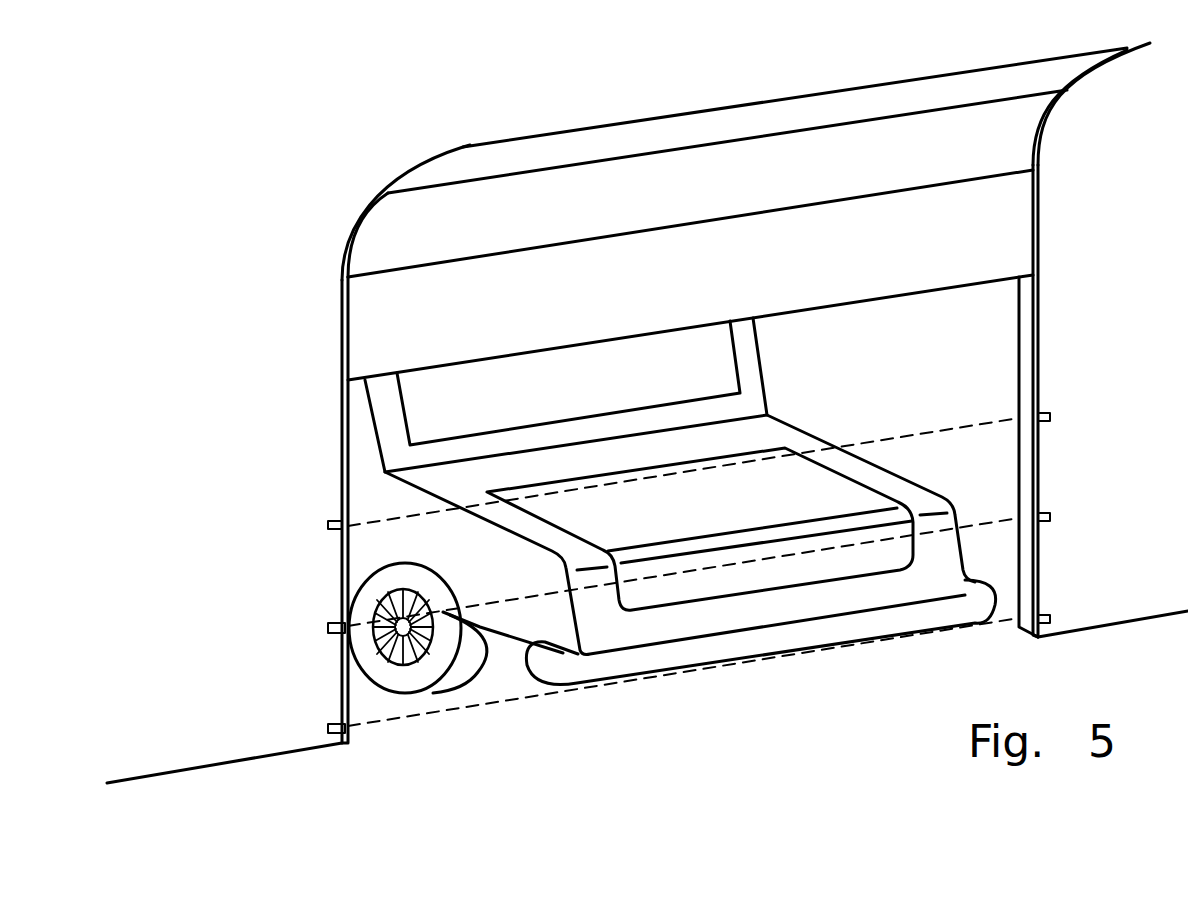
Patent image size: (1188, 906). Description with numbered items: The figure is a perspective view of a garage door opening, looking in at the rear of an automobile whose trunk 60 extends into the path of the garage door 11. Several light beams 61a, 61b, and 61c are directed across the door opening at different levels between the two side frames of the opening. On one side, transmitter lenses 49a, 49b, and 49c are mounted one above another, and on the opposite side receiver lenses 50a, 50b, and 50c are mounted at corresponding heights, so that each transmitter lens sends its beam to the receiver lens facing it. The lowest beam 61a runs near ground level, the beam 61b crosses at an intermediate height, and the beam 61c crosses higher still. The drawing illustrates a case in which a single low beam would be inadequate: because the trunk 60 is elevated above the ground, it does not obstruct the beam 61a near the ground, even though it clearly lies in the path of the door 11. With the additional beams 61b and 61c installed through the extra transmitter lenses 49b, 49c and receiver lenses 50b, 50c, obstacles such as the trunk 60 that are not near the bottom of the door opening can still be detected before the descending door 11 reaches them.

The garage door 11 is at (692, 268).
The trunk 60 is at (714, 514).
The transmitter lens 49a is at (328, 728).
The transmitter lens 49b is at (328, 628).
The transmitter lens 49c is at (328, 526).
The receiver lens 50a is at (1048, 617).
The receiver lens 50b is at (1048, 515).
The receiver lens 50c is at (1048, 415).
The light beam 61a is at (405, 718).
The light beam 61b is at (509, 600).
The light beam 61c is at (390, 515).